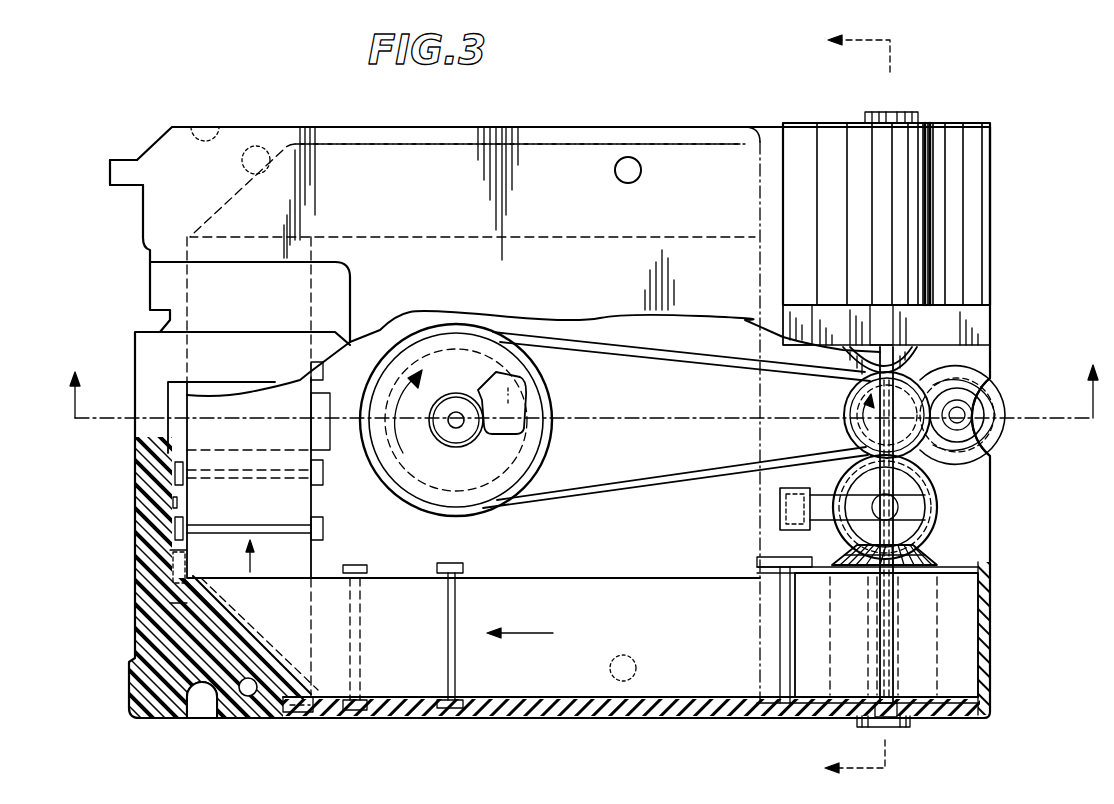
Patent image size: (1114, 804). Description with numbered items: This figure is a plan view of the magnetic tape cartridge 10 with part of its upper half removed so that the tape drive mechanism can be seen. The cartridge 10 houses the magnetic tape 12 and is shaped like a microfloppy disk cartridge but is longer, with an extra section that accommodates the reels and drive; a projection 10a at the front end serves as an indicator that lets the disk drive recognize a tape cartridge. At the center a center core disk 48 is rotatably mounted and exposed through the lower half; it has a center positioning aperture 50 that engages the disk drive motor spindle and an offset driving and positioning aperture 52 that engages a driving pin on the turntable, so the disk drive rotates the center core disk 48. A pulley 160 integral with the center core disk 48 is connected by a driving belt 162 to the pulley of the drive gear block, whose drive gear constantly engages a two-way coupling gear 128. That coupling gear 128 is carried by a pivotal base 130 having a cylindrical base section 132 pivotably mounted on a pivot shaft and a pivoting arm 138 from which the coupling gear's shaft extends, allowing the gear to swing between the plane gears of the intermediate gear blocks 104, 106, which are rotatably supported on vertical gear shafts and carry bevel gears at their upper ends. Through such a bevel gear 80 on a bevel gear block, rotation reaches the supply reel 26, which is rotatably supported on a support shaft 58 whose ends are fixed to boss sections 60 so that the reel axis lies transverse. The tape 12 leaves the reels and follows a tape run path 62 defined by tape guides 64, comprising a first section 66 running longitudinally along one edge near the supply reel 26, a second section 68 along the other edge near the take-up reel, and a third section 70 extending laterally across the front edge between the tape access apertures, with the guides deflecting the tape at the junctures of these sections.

The cartridge 10 is at (575, 126).
The projection 10a is at (118, 165).
The magnetic tape 12 is at (475, 683).
The supply reel 26 is at (953, 680).
The center core disk 48 is at (463, 340).
The center positioning aperture 50 is at (450, 408).
The driving and positioning aperture 52 is at (500, 380).
The support shaft 58 is at (930, 478).
The boss sections 60 is at (892, 112).
The tape run path 62 is at (538, 672).
The tape guides 64 is at (175, 580).
The first section 66 is at (690, 683).
The second section 68 is at (430, 160).
The third section 70 is at (197, 493).
The bevel gear 80 is at (965, 542).
The intermediate gear block 104 is at (925, 497).
The intermediate gear block 106 is at (920, 360).
The two-way coupling gear 128 is at (920, 386).
The pivotal base 130 is at (870, 442).
The cylindrical base section 132 is at (975, 410).
The pivoting arm 138 is at (975, 460).
The pulley 160 is at (552, 412).
The driving belt 162 is at (590, 495).